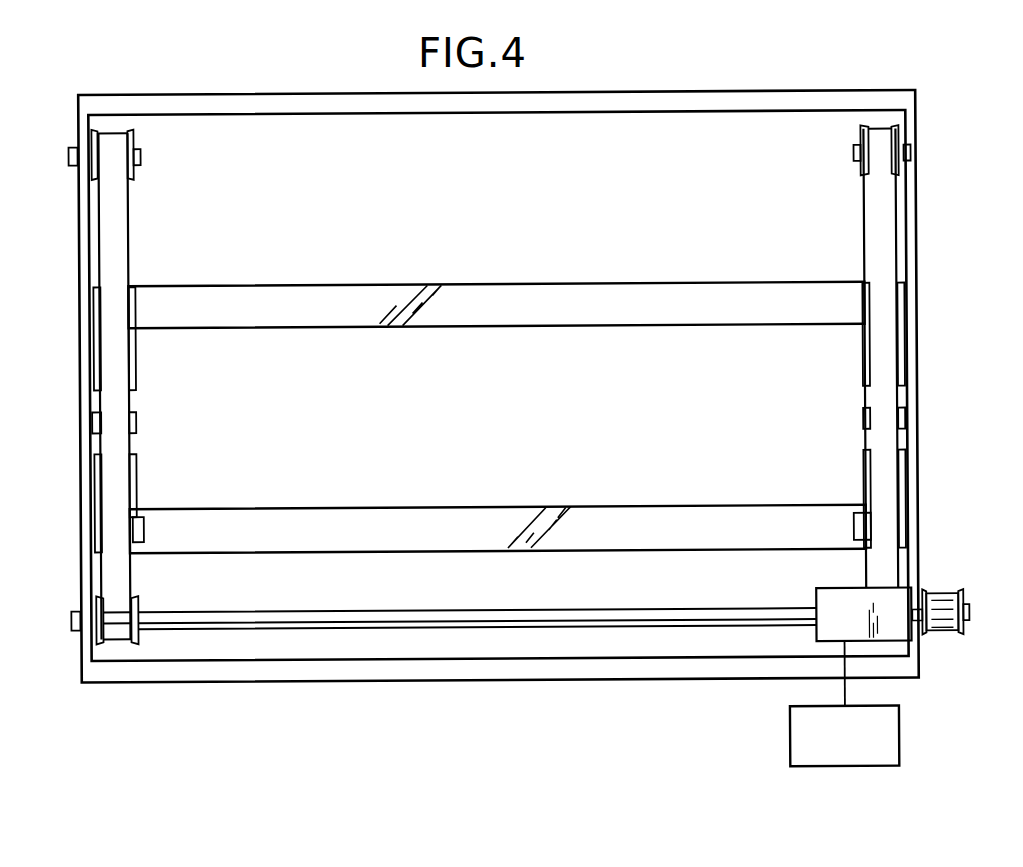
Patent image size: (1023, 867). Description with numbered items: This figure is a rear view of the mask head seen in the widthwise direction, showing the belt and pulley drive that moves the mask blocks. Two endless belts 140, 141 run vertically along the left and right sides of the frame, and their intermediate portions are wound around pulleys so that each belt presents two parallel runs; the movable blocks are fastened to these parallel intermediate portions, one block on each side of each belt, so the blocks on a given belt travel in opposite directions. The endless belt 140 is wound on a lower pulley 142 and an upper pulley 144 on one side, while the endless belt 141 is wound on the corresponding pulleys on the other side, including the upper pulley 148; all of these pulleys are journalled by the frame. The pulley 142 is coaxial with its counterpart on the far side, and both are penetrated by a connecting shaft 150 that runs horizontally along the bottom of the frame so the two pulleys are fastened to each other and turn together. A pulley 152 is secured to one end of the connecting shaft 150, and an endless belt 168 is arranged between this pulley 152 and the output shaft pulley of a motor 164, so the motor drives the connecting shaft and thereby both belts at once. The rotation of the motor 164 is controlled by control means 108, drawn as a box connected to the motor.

The control means 108 is at (898, 720).
The endless belt 140 is at (118, 368).
The endless belt 141 is at (888, 336).
The pulley 142 is at (135, 600).
The pulley 144 is at (135, 140).
The pulley 148 is at (900, 136).
The connecting shaft 150 is at (482, 610).
The pulley 152 is at (975, 583).
The motor 164 is at (832, 600).
The endless belt 168 is at (945, 640).